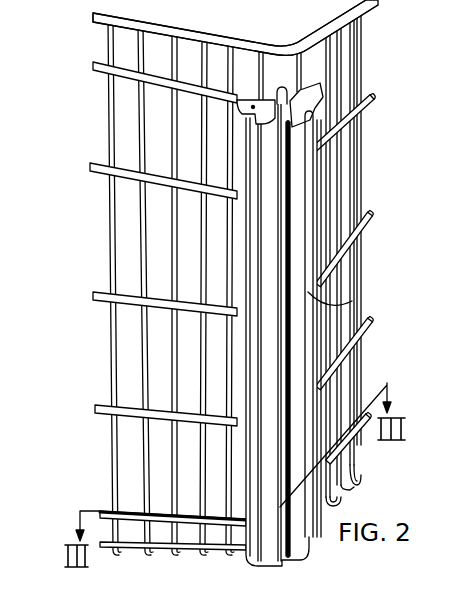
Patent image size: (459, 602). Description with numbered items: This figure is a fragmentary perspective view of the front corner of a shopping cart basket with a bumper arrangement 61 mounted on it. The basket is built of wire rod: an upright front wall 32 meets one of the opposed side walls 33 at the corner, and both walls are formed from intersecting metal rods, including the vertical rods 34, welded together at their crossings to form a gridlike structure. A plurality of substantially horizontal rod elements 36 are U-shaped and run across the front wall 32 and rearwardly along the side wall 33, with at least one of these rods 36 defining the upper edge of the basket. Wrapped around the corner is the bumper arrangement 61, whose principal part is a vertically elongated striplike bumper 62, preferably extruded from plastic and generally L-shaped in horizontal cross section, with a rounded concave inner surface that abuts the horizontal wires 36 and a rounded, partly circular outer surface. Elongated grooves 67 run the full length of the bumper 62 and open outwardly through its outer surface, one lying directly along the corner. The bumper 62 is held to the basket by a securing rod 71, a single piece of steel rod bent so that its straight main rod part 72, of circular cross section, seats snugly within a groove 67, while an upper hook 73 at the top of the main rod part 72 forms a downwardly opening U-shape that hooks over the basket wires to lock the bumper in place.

The upright front wall 32 is at (366, 248).
The side wall 33 is at (102, 157).
The vertical rod 34 is at (113, 365).
The horizontal rod element 36 is at (180, 87).
The bumper arrangement 61 is at (328, 178).
The bumper 62 is at (299, 160).
The groove 67 is at (330, 303).
The securing rod 71 is at (285, 330).
The main rod part 72 is at (283, 222).
The upper hook 73 is at (302, 101).